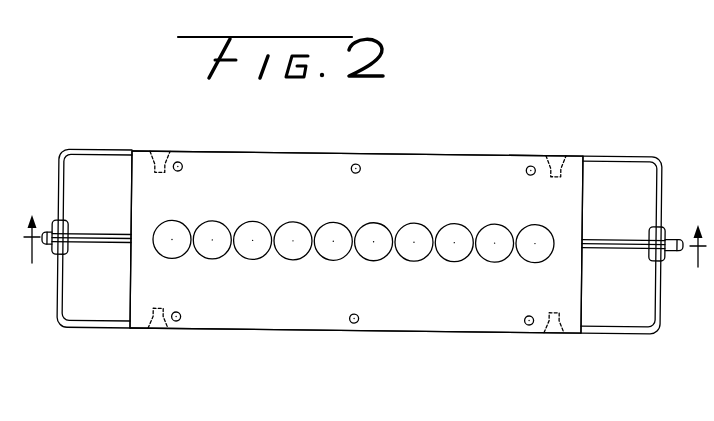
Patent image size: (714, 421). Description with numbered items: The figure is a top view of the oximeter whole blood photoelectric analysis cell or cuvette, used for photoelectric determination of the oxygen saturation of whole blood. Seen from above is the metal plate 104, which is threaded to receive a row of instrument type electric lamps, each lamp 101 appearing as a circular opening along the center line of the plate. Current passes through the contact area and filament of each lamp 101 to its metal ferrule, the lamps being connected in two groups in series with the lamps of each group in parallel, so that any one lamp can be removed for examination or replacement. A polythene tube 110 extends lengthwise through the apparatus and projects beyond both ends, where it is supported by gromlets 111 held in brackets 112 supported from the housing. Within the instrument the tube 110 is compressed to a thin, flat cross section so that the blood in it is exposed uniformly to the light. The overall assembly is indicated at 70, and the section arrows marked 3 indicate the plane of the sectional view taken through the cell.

The tray assembly 70 is at (489, 338).
The metal plate 104 is at (418, 166).
The lamp 101 is at (536, 231).
The brackets 112 is at (78, 329).
The tube 110 is at (597, 248).
The gromlets 111 is at (67, 254).
The section line 3- 3 is at (365, 250).